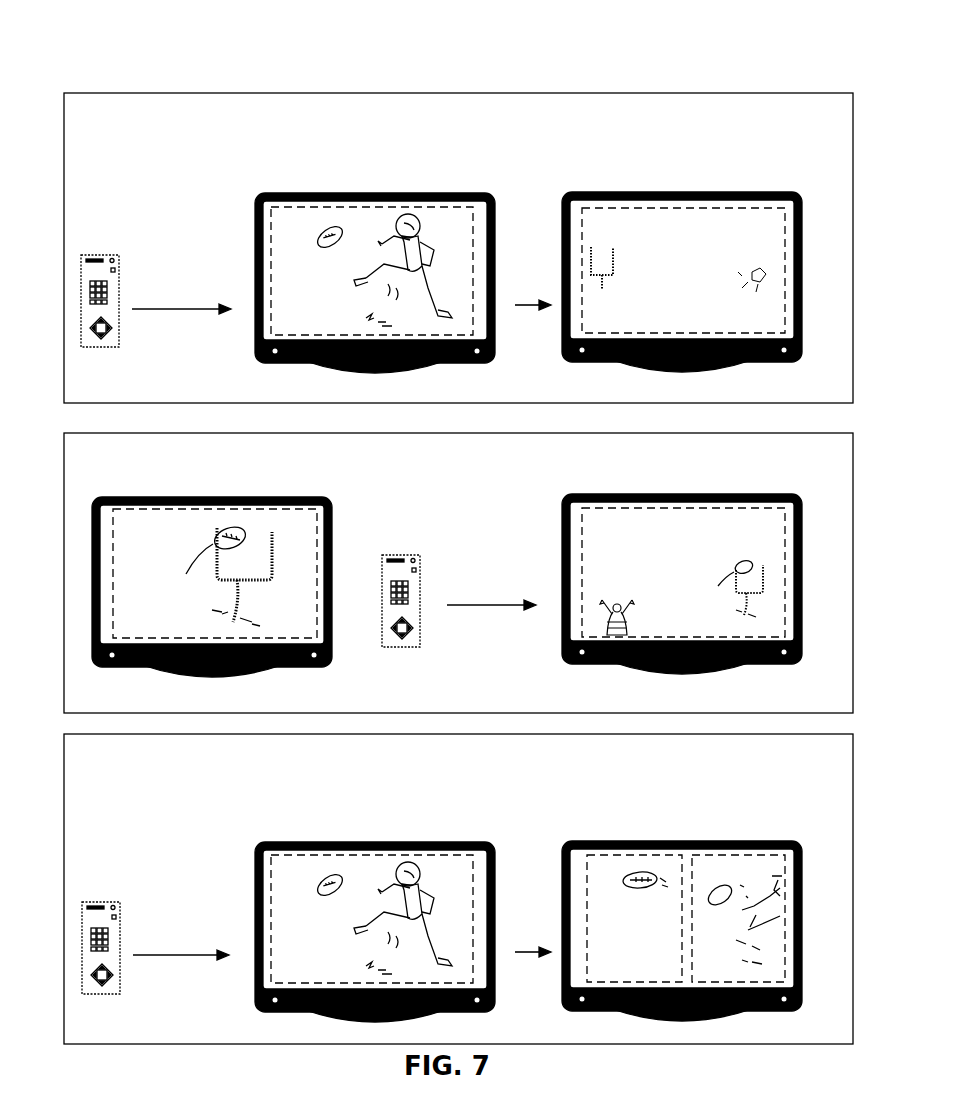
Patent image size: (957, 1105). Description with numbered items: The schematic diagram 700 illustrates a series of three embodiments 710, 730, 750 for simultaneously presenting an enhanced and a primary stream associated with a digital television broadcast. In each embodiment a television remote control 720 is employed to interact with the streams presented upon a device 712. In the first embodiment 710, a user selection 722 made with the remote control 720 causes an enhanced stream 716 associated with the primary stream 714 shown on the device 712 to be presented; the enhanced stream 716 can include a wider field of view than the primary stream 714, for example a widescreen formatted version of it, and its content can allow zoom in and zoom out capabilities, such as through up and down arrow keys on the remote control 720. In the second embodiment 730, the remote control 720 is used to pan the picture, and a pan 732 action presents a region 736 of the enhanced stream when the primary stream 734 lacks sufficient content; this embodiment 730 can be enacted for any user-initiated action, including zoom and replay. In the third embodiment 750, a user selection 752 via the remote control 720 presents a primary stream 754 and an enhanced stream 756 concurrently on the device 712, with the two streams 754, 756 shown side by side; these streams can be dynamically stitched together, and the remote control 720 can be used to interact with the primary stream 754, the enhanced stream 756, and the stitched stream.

The schematic diagram 700 is at (818, 78).
The embodiment 710 is at (809, 121).
The device 712 is at (311, 194).
The primary stream 714 is at (387, 207).
The enhanced stream 716 is at (670, 206).
The television remote control 720 is at (102, 900).
The user selection 722 is at (181, 276).
The embodiment 730 is at (809, 463).
The pan 732 is at (491, 586).
The primary stream 734 is at (200, 508).
The region 736 is at (670, 508).
The embodiment 750 is at (811, 758).
The user selection 752 is at (181, 923).
The primary stream 754 is at (740, 830).
The enhanced stream 756 is at (645, 855).